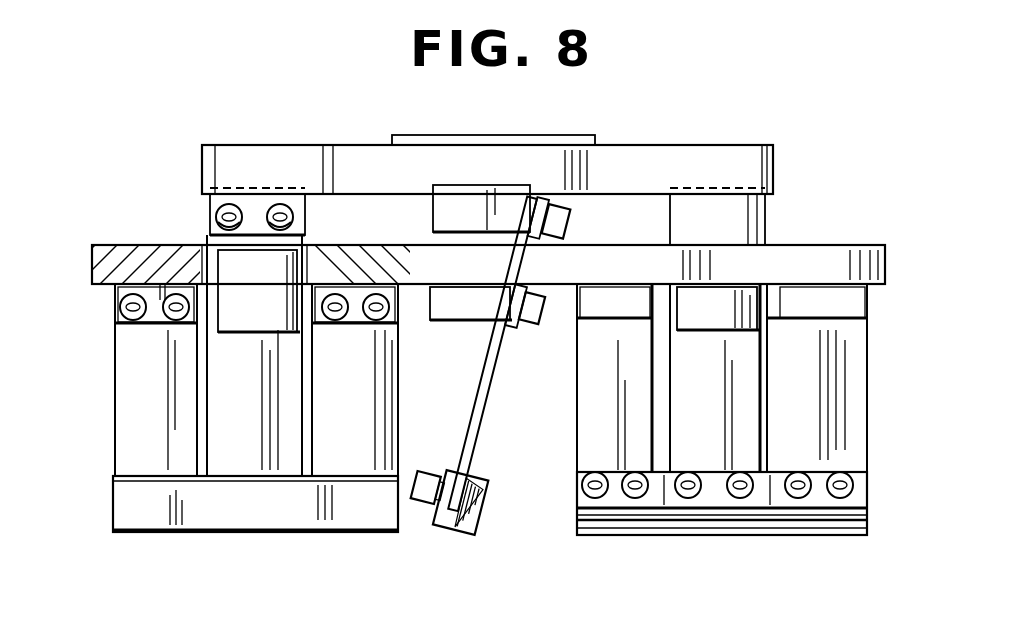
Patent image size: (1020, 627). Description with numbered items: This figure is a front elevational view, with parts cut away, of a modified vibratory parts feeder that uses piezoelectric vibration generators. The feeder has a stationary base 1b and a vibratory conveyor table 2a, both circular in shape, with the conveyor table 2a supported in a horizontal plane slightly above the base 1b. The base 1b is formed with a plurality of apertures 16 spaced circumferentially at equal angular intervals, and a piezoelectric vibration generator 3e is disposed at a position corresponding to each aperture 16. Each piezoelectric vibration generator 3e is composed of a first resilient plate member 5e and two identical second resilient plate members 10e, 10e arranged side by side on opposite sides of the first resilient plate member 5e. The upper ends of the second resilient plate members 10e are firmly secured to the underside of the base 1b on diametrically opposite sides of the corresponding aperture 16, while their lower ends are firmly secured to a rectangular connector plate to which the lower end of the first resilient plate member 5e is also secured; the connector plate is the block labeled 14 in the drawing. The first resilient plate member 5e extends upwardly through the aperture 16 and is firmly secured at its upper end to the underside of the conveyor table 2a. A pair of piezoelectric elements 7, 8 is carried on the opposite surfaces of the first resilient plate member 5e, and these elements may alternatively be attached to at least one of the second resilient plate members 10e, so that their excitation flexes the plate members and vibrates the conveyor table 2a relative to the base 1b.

The stationary base 1b is at (819, 252).
The vibratory conveyor table 2a is at (352, 162).
The piezoelectric vibration generator 3e is at (252, 216).
The first resilient plate member 5e is at (243, 466).
The piezoelectric element 7 is at (243, 320).
The piezoelectric element 8 is at (488, 327).
The second resilient plate member 10e is at (128, 407).
The base block 14 is at (350, 518).
The aperture 16 is at (207, 257).